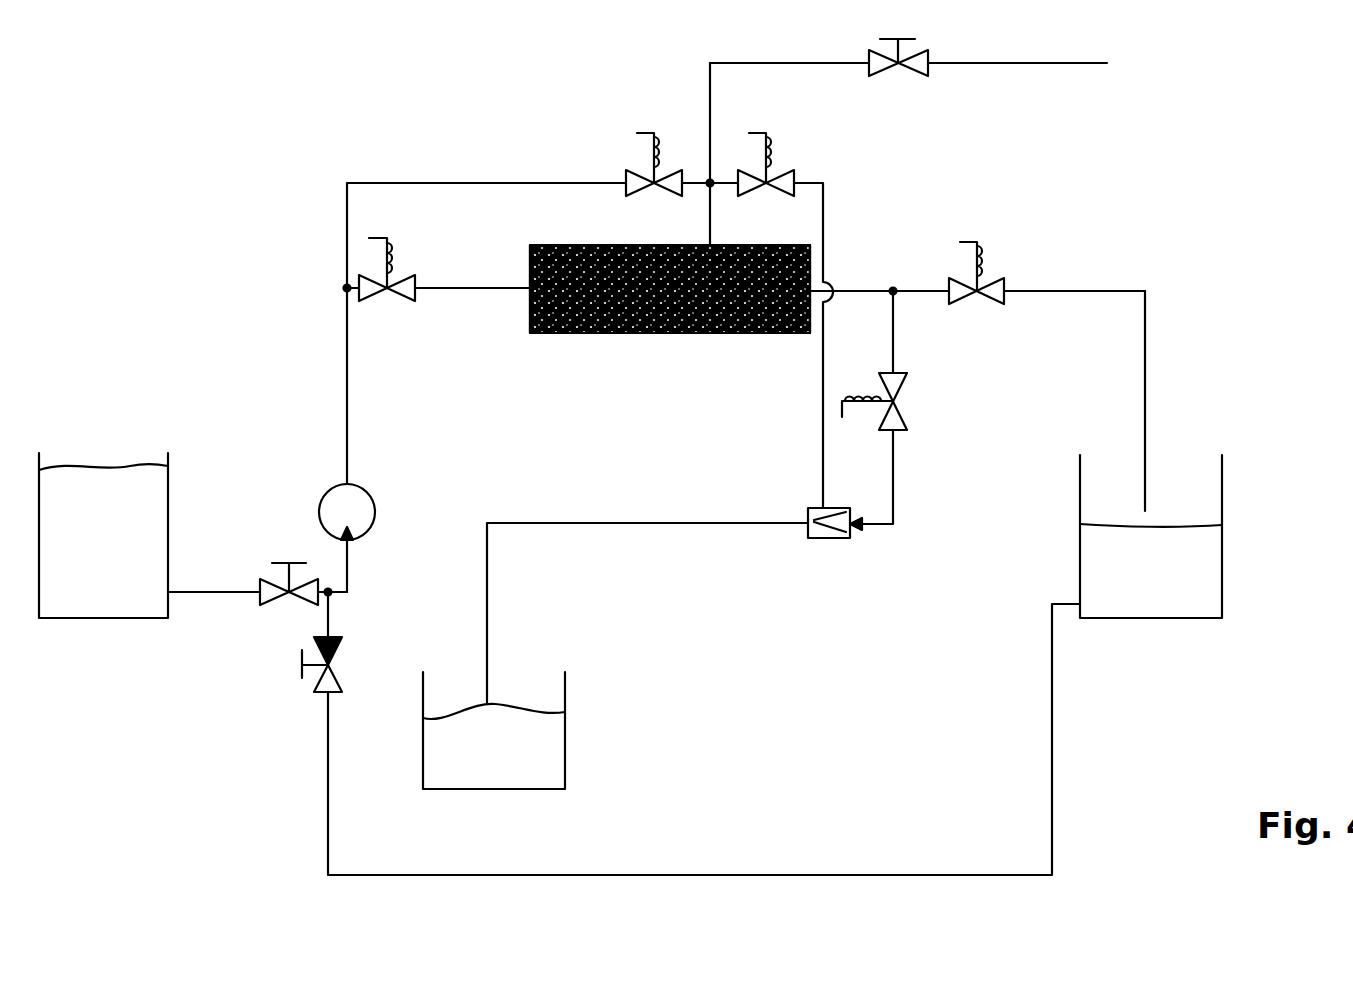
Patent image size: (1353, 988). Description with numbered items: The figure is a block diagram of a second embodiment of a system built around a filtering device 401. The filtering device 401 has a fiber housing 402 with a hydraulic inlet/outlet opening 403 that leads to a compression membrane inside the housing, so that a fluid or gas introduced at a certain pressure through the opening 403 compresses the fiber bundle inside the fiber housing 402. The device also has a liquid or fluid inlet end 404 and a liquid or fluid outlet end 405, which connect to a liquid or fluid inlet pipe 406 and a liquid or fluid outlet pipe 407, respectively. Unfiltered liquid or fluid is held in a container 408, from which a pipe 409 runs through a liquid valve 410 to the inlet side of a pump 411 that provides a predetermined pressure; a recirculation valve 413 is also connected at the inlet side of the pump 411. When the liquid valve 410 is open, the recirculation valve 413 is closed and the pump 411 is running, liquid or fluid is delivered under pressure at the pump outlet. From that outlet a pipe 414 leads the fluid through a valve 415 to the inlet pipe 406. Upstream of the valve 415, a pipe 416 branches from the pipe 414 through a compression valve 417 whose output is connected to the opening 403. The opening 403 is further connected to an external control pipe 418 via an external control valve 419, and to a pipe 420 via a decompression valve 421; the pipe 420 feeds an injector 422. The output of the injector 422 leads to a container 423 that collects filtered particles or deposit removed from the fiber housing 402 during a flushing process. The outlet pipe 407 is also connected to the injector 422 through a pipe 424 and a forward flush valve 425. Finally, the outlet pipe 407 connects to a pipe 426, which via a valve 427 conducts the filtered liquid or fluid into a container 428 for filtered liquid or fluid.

The filtering device 401 is at (744, 360).
The fiber housing 402 is at (610, 333).
The hydraulic inlet/outlet opening 403 is at (708, 240).
The liquid or fluid inlet end 404 is at (523, 275).
The liquid or fluid outlet end 405 is at (822, 265).
The liquid or fluid inlet pipe 406 is at (472, 298).
The liquid or fluid outlet pipe 407 is at (854, 286).
The container for unfiltered liquid or fluid 408 is at (90, 622).
The pipe 409 is at (212, 598).
The liquid valve 410 is at (268, 566).
The pump 411 is at (312, 490).
The recirculation valve 413 is at (308, 688).
The pipe 414 is at (336, 372).
The valve 415 is at (422, 215).
The pipe 416 is at (702, 168).
The compression valve 417 is at (637, 160).
The external control pipe 418 is at (1015, 72).
The external control valve 419 is at (870, 55).
The pipe 420 is at (830, 198).
The decompression valve 421 is at (800, 98).
The injector 422 is at (818, 546).
The container 423 is at (570, 736).
The pipe 424 is at (900, 482).
The forward flush valve 425 is at (910, 386).
The pipe 426 is at (1150, 356).
The valve 427 is at (1000, 250).
The container for filtered liquid or fluid 428 is at (1146, 622).